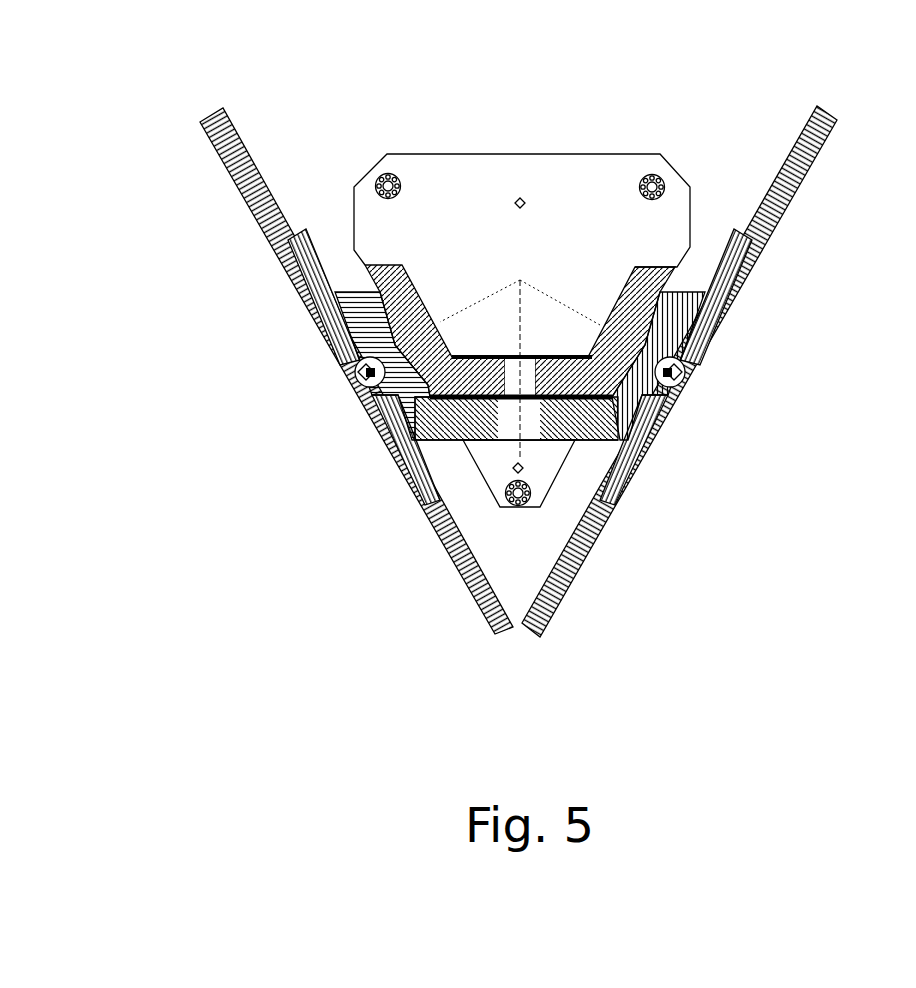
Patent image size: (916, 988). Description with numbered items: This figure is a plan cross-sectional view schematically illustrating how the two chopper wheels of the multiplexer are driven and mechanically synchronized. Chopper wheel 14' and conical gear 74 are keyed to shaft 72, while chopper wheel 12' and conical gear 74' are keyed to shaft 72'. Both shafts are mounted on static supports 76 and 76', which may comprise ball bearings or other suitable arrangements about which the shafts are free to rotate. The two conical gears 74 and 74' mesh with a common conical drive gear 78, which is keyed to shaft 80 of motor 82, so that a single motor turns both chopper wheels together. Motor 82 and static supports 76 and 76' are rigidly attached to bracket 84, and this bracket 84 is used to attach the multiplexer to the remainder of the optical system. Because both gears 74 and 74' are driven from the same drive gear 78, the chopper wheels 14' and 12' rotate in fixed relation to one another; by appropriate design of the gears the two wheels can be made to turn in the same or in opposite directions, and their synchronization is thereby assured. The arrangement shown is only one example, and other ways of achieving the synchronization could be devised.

The chopper wheel 14' is at (328, 371).
The chopper wheel 12' is at (698, 371).
The bracket 84 is at (532, 154).
The conical gear 74 is at (355, 252).
The conical gear 74' is at (685, 290).
The static support 76 is at (435, 214).
The static support 76' is at (605, 219).
The shaft 80 is at (515, 368).
The conical drive gear 78 is at (602, 440).
The motor 82 is at (543, 473).
The shaft 72 is at (333, 437).
The shaft 72' is at (689, 444).